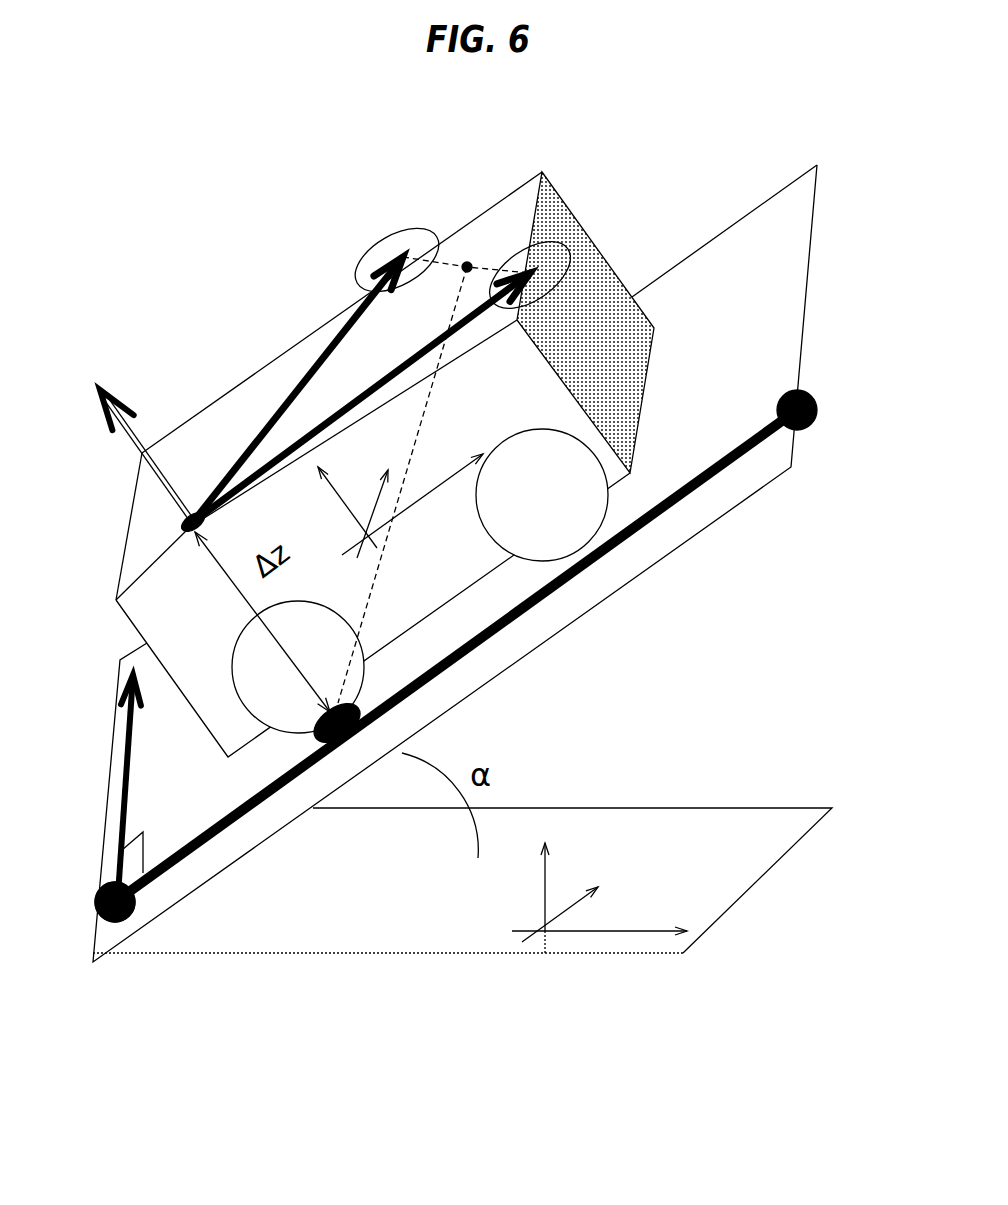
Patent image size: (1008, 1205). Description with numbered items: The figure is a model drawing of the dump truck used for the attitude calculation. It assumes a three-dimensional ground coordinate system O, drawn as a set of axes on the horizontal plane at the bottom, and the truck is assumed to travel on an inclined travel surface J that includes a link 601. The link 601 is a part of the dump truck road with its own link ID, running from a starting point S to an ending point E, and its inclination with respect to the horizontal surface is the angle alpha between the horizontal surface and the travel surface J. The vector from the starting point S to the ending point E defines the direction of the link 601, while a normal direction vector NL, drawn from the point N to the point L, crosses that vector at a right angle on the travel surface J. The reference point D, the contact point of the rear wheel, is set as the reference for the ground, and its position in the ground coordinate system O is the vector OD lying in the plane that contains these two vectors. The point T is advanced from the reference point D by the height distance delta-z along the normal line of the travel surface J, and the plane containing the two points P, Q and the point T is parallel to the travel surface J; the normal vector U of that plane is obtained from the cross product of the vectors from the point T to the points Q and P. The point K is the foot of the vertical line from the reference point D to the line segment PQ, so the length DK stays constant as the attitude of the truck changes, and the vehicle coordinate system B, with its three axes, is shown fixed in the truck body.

The link 601 is at (648, 527).
The travel surface J is at (754, 258).
The ending point E is at (808, 430).
The normal direction vector start point N is at (95, 904).
The starting point S is at (128, 925).
The normal direction vector end point L is at (114, 781).
The normal vector U is at (125, 437).
The point T is at (164, 522).
The point P is at (321, 368).
The point Q is at (387, 375).
The foot of the vertical line K is at (434, 463).
The reference point D is at (325, 720).
The vehicle coordinate system B is at (400, 510).
The ground coordinate system O is at (462, 906).